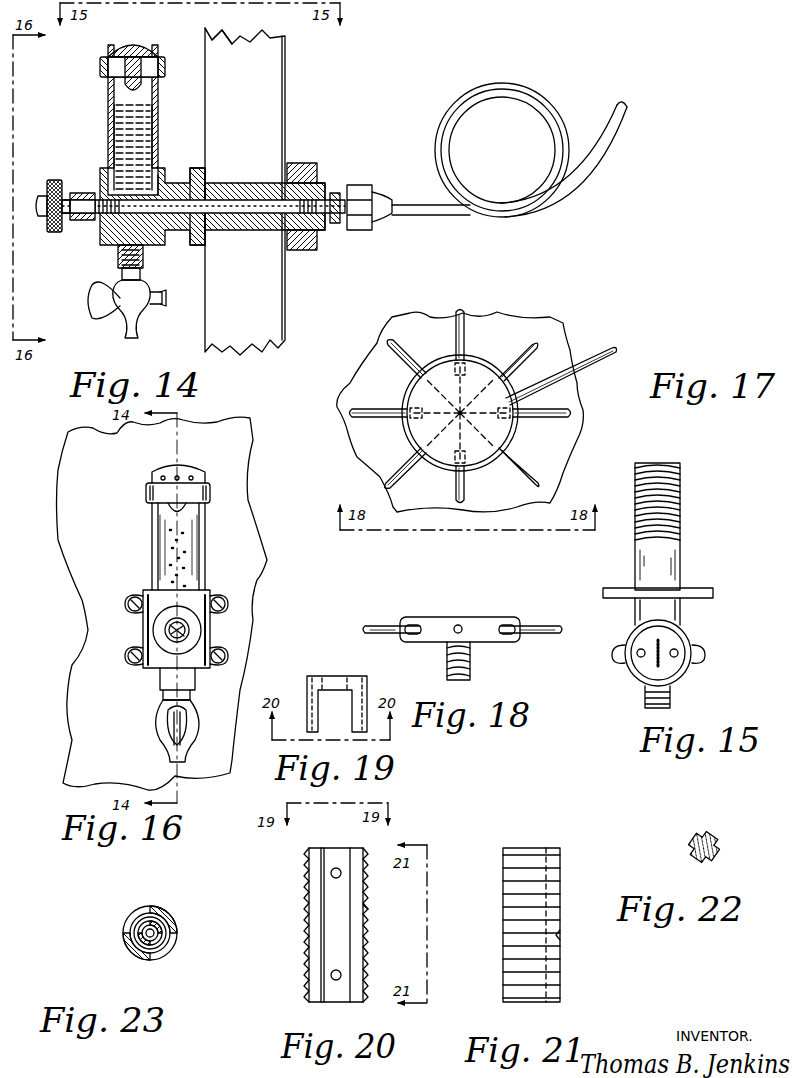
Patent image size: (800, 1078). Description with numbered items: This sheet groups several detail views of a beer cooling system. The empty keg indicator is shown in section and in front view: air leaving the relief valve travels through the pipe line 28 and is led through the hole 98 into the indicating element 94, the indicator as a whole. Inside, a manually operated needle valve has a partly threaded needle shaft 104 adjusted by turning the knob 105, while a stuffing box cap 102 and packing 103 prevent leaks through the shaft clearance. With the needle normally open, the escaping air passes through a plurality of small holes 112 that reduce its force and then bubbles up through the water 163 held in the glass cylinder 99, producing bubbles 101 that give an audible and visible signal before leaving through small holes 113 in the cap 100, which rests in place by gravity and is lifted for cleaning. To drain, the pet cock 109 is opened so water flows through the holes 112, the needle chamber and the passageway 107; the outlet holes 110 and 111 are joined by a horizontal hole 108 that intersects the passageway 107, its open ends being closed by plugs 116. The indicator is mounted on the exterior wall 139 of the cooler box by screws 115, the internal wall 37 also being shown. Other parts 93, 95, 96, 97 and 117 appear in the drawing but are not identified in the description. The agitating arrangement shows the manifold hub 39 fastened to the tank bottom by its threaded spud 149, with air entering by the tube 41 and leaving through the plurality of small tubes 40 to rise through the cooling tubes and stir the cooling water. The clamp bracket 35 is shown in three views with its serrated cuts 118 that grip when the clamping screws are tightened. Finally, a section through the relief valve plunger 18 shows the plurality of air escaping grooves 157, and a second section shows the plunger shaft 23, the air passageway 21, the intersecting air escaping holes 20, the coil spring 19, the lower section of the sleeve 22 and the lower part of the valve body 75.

In FIG. 22, the relief valve plunger 18 is at (716, 840).
In FIG. 23, the coil spring 19 is at (150, 958).
In FIG. 23, the intersecting holes 20 is at (172, 930).
In FIG. 23, the air passageway 21 is at (134, 950).
In FIG. 23, the sleeve 22 is at (128, 932).
In FIG. 23, the plunger shaft 23 is at (168, 948).
In FIG. 14, the pipe line 28 is at (627, 125).
In FIG. 19, the clamp bracket 35 is at (356, 678).
In FIG. 20, the clamp bracket 35 is at (346, 848).
In FIG. 21, the clamp bracket 35 is at (540, 850).
In FIG. 14, the internal wall of cooler box 37 is at (287, 76).
In FIG. 17, the manifold hub 39 is at (498, 392).
In FIG. 18, the manifold hub 39 is at (488, 617).
In FIG. 17, the small tubes 40 is at (525, 346).
In FIG. 18, the small tubes 40 is at (528, 626).
In FIG. 17, the air supply tube 41 is at (613, 346).
In FIG. 23, the valve body 75 is at (140, 914).
In FIG. 14, the coupling nut 93 is at (360, 186).
In FIG. 14, the indicating element 94 is at (168, 242).
In FIG. 16, the indicating element 94 is at (150, 628).
In FIG. 15, the indicating element 94 is at (683, 566).
In FIG. 14, the clamping nut 95 is at (291, 252).
In FIG. 14, the lock nut 96 is at (302, 250).
In FIG. 14, the sleeve end 97 is at (320, 245).
In FIG. 14, the hole 98 is at (184, 184).
In FIG. 14, the glass cylinder 99 is at (157, 115).
In FIG. 14, the cap 100 is at (160, 63).
In FIG. 16, the cap 100 is at (146, 493).
In FIG. 14, the bubbles 101 is at (112, 122).
In FIG. 16, the bubbles 101 is at (190, 532).
In FIG. 14, the stuffing box cap 102 is at (106, 182).
In FIG. 14, the packing 103 is at (88, 193).
In FIG. 14, the needle shaft 104 is at (68, 196).
In FIG. 14, the knob 105 is at (62, 222).
In FIG. 16, the knob 105 is at (190, 617).
In FIG. 14, the passageway 107 is at (131, 214).
In FIG. 14, the horizontal hole 108 is at (128, 250).
In FIG. 14, the pet cock 109 is at (142, 338).
In FIG. 16, the pet cock 109 is at (170, 748).
In FIG. 15, the hole 110 is at (678, 649).
In FIG. 15, the hole 111 is at (638, 650).
In FIG. 14, the small holes 112 is at (160, 176).
In FIG. 15, the small holes 112 is at (668, 668).
In FIG. 14, the small holes 113 is at (110, 55).
In FIG. 16, the small holes 113 is at (200, 472).
In FIG. 16, the screws 115 is at (132, 597).
In FIG. 16, the plugs 116 is at (138, 662).
In FIG. 20, the groove 117 is at (330, 848).
In FIG. 20, the serrated cuts 118 is at (366, 908).
In FIG. 21, the serrated cuts 118 is at (561, 935).
In FIG. 14, the exterior wall of cooler box 139 is at (208, 40).
In FIG. 16, the exterior wall of cooler box 139 is at (232, 483).
In FIG. 18, the threaded spud 149 is at (471, 672).
In FIG. 22, the air escaping grooves 157 is at (690, 848).
In FIG. 14, the water 163 is at (128, 98).